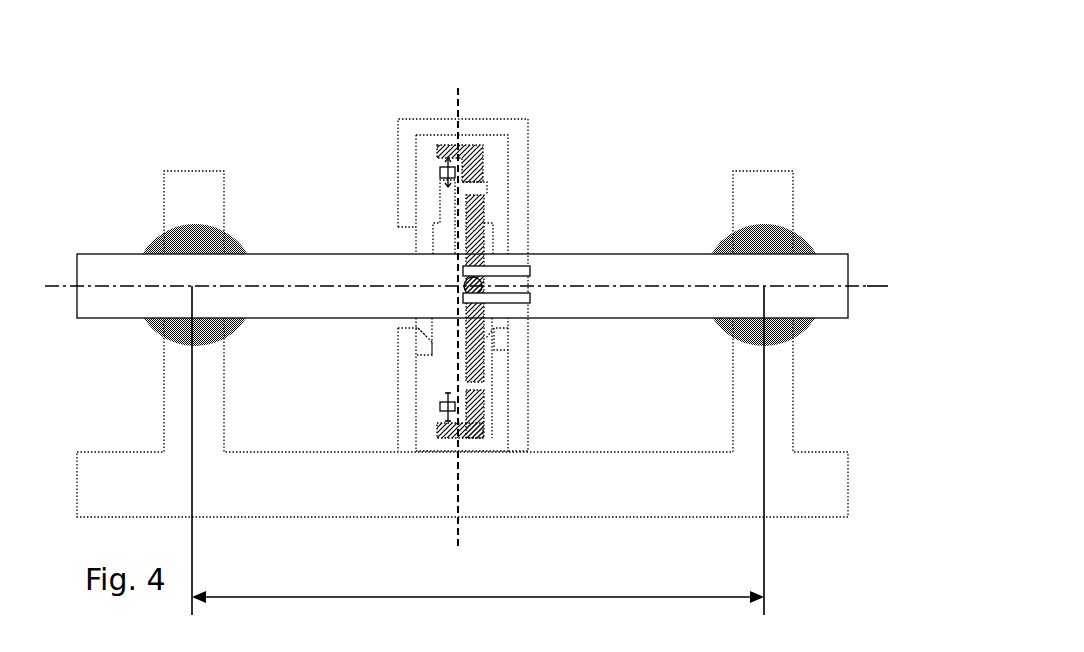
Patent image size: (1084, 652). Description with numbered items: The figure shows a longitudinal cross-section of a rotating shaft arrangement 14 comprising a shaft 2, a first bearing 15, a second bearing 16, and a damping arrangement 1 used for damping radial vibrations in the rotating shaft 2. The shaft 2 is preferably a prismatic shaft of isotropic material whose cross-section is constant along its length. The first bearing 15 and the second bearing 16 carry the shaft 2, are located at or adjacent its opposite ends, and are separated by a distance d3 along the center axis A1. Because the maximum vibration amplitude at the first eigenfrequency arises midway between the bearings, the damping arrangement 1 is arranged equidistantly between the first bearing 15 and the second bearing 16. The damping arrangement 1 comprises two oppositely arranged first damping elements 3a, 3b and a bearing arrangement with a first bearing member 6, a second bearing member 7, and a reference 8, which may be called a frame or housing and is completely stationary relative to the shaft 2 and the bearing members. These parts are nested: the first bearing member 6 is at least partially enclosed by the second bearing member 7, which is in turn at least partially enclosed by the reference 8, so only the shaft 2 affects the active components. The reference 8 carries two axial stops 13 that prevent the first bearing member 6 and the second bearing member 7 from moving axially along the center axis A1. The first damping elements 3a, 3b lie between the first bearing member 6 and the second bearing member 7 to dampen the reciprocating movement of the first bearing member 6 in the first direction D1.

The damping arrangement 1 is at (540, 134).
The shaft 2 is at (604, 268).
The first damping element 3a is at (440, 166).
The first damping element 3b is at (445, 408).
The first bearing member 6 is at (440, 241).
The second bearing member 7 is at (472, 360).
The reference 8 is at (512, 229).
The axial stop 13 is at (415, 342).
The rotating shaft arrangement 14 is at (737, 74).
The first bearing 15 is at (157, 222).
The second bearing 16 is at (805, 232).
The center axis A1 is at (870, 286).
The first direction D1 is at (458, 98).
The distance d3 is at (478, 450).